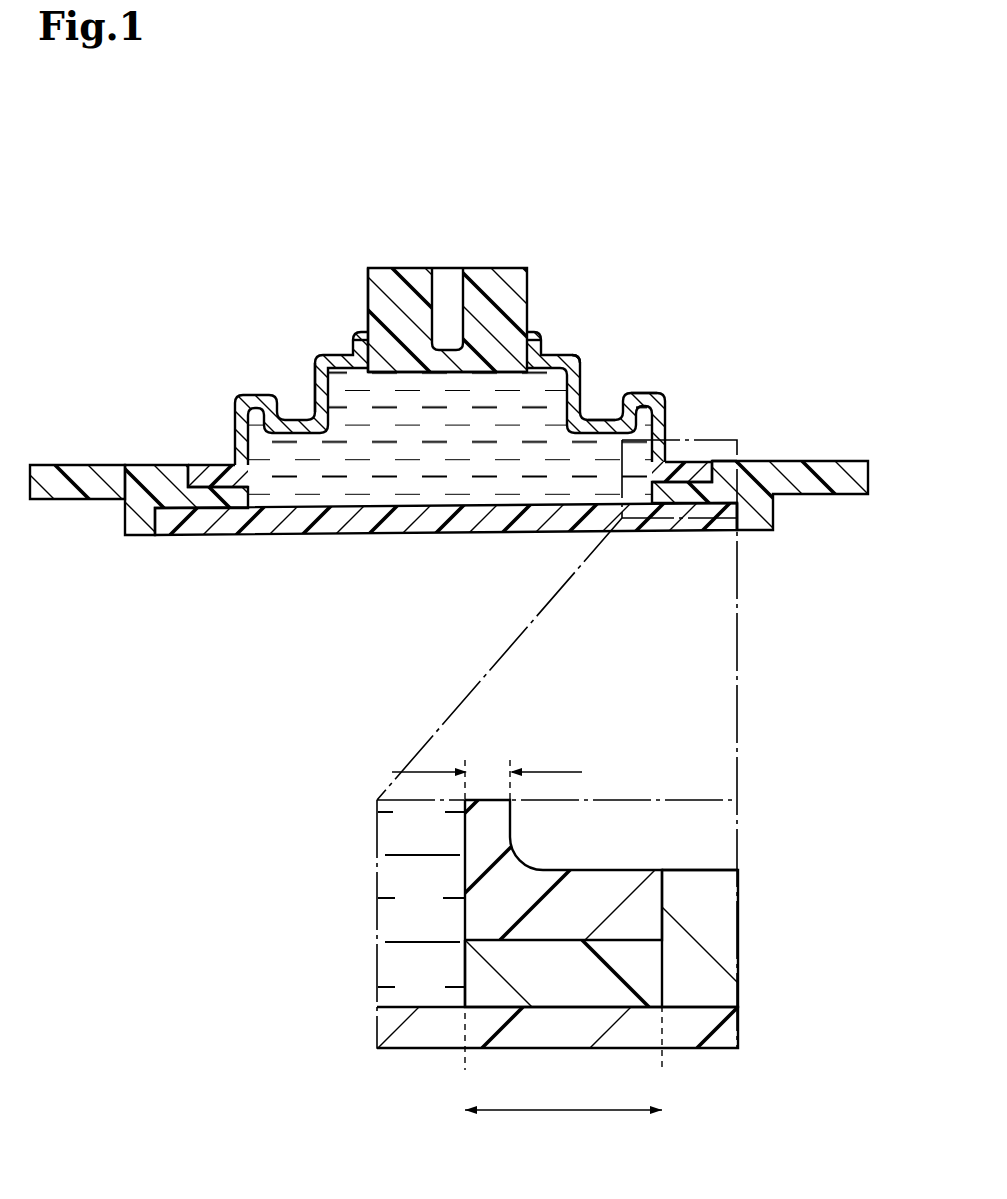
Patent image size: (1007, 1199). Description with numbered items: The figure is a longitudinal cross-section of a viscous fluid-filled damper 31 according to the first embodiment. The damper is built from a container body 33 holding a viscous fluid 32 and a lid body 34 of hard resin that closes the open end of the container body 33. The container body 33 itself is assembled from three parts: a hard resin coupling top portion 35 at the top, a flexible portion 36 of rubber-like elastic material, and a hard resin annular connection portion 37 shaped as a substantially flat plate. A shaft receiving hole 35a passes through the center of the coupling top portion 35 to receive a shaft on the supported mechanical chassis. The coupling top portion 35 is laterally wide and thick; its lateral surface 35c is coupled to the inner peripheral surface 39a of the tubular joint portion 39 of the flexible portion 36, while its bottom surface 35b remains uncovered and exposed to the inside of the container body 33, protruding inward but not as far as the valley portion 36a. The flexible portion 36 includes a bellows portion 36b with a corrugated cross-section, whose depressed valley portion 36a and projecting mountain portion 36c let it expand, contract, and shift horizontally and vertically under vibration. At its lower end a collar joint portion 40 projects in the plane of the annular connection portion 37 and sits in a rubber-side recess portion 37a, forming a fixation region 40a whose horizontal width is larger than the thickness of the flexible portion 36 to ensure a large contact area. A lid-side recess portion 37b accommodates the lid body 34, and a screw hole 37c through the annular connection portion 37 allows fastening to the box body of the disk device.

The viscous fluid-filled damper 31 is at (708, 222).
The viscous fluid 32 is at (354, 445).
The container body 33 is at (575, 349).
The lid body 34 is at (222, 535).
The coupling top portion 35 is at (417, 268).
The shaft receiving hole 35a is at (449, 280).
The bottom surface 35b is at (448, 373).
The lateral surface 35c is at (368, 302).
The flexible portion 36 is at (583, 377).
The valley portion 36a is at (600, 417).
The bellows portion 36b is at (314, 392).
The mountain portion 36c is at (628, 395).
The annular connection portion 37 is at (850, 493).
The rubber-side recess portion 37a is at (705, 461).
The lid-side recess portion 37b is at (742, 518).
The screw hole 37c is at (91, 483).
The tubular joint portion 39 is at (540, 338).
The inner peripheral surface 39a is at (364, 334).
The collar joint portion 40 is at (605, 868).
The fixation region 40a is at (663, 483).